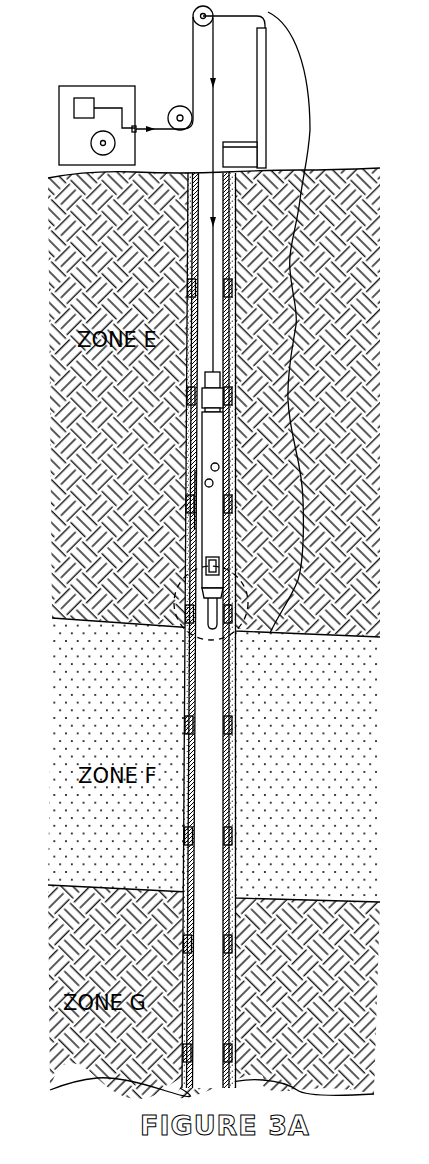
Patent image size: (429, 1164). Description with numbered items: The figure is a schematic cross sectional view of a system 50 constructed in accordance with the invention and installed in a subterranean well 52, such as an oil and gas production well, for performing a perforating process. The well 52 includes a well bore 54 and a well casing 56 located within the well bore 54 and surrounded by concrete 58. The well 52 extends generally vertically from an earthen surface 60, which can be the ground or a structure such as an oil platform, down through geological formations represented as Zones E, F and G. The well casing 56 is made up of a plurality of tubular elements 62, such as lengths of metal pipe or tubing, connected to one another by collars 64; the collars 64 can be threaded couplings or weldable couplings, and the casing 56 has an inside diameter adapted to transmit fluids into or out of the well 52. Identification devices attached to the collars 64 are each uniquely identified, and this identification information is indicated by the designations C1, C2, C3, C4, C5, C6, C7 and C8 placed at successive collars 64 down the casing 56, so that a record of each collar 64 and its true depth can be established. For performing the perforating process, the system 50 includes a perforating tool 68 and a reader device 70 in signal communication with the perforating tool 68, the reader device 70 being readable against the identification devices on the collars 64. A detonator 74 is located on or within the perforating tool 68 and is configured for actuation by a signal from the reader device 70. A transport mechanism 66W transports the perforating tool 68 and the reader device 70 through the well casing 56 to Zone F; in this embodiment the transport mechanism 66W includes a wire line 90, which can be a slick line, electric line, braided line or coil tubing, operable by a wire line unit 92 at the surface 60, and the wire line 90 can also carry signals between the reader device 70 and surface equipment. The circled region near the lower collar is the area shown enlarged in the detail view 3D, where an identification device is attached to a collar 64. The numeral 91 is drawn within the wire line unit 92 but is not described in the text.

The system 50 is at (214, 402).
The subterranean well 52 is at (195, 257).
The well bore 54 is at (242, 228).
The well casing 56 is at (234, 371).
The concrete 58 is at (240, 268).
The earthen surface 60 is at (324, 174).
The tubular elements 62 is at (196, 258).
The collars 64 is at (187, 492).
The transport mechanism 66W is at (180, 82).
The perforating tool 68 is at (214, 523).
The reader device 70 is at (243, 640).
The detonator 74 is at (206, 564).
The wire line 90 is at (216, 66).
The processor 91 is at (80, 100).
The wire line unit 92 is at (120, 86).
The collar identification designation C1 is at (190, 289).
The collar identification designation C2 is at (190, 397).
The collar identification designation C3 is at (189, 505).
The collar identification designation C4 is at (232, 604).
The collar identification designation C5 is at (188, 725).
The collar identification designation C6 is at (187, 836).
The collar identification designation C7 is at (187, 944).
The collar identification designation C8 is at (186, 1053).
The detail view reference 3D is at (246, 588).